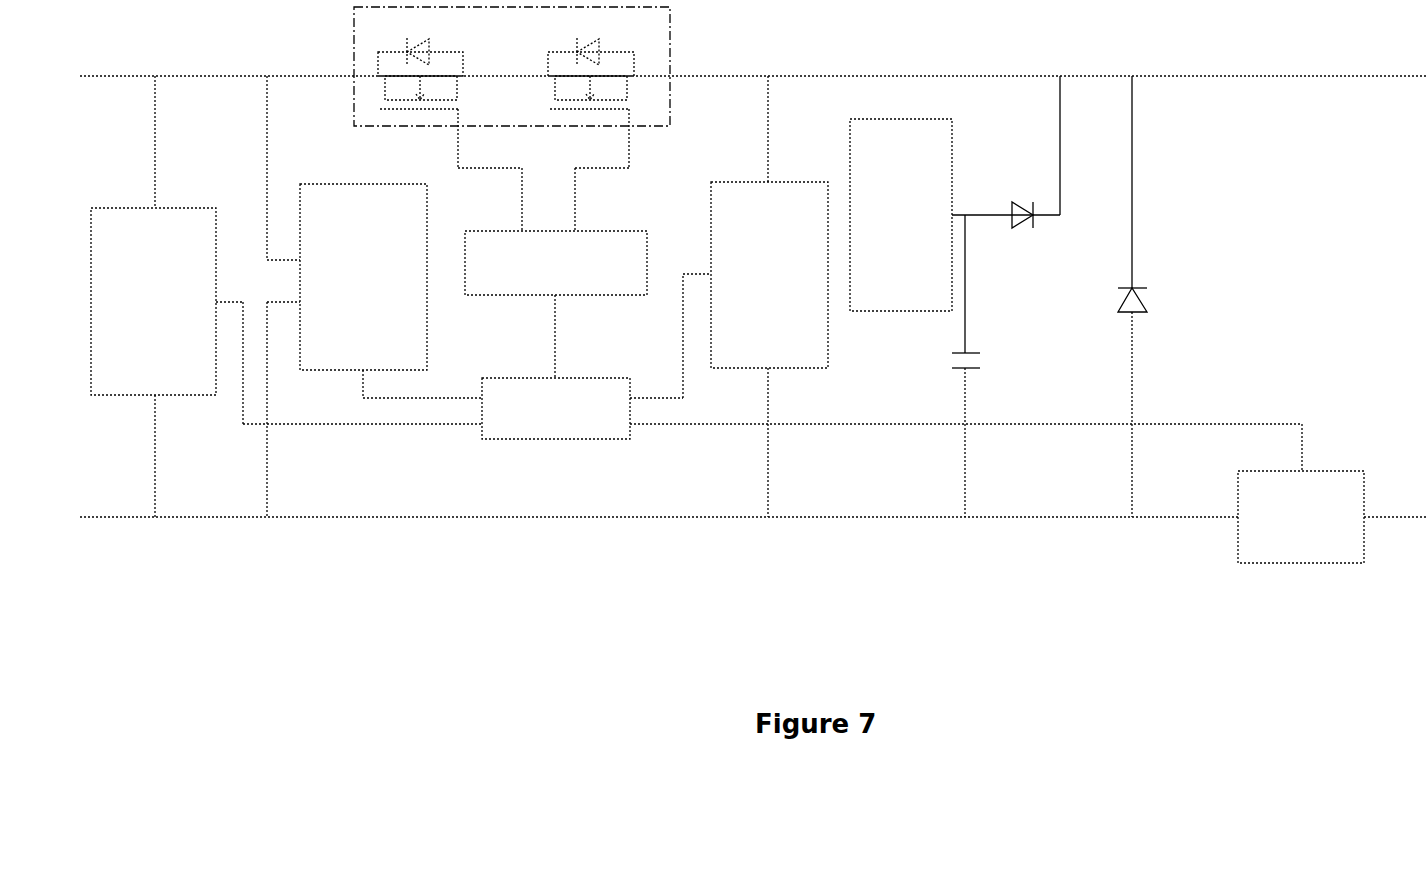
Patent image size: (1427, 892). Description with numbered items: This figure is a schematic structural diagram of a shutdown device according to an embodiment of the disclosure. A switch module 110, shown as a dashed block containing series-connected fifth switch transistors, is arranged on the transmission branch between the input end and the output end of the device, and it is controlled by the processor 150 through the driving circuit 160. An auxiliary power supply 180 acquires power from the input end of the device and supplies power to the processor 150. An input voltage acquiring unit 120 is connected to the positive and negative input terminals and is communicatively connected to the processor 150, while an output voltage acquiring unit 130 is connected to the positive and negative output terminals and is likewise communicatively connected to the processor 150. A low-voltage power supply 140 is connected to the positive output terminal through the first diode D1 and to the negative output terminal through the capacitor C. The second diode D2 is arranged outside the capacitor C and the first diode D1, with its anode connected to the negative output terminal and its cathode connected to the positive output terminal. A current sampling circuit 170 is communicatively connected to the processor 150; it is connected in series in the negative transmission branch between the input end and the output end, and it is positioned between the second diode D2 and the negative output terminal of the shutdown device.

The switch module 110 is at (670, 53).
The input voltage acquiring unit 120 is at (327, 184).
The output voltage acquiring unit 130 is at (747, 182).
The low-voltage power supply 140 is at (850, 133).
The processor 150 is at (557, 439).
The driving circuit 160 is at (588, 231).
The current sampling circuit 170 is at (1238, 507).
The auxiliary power supply 180 is at (188, 208).
The first diode D1 is at (1015, 201).
The second diode D2 is at (1115, 318).
The capacitor C is at (974, 347).